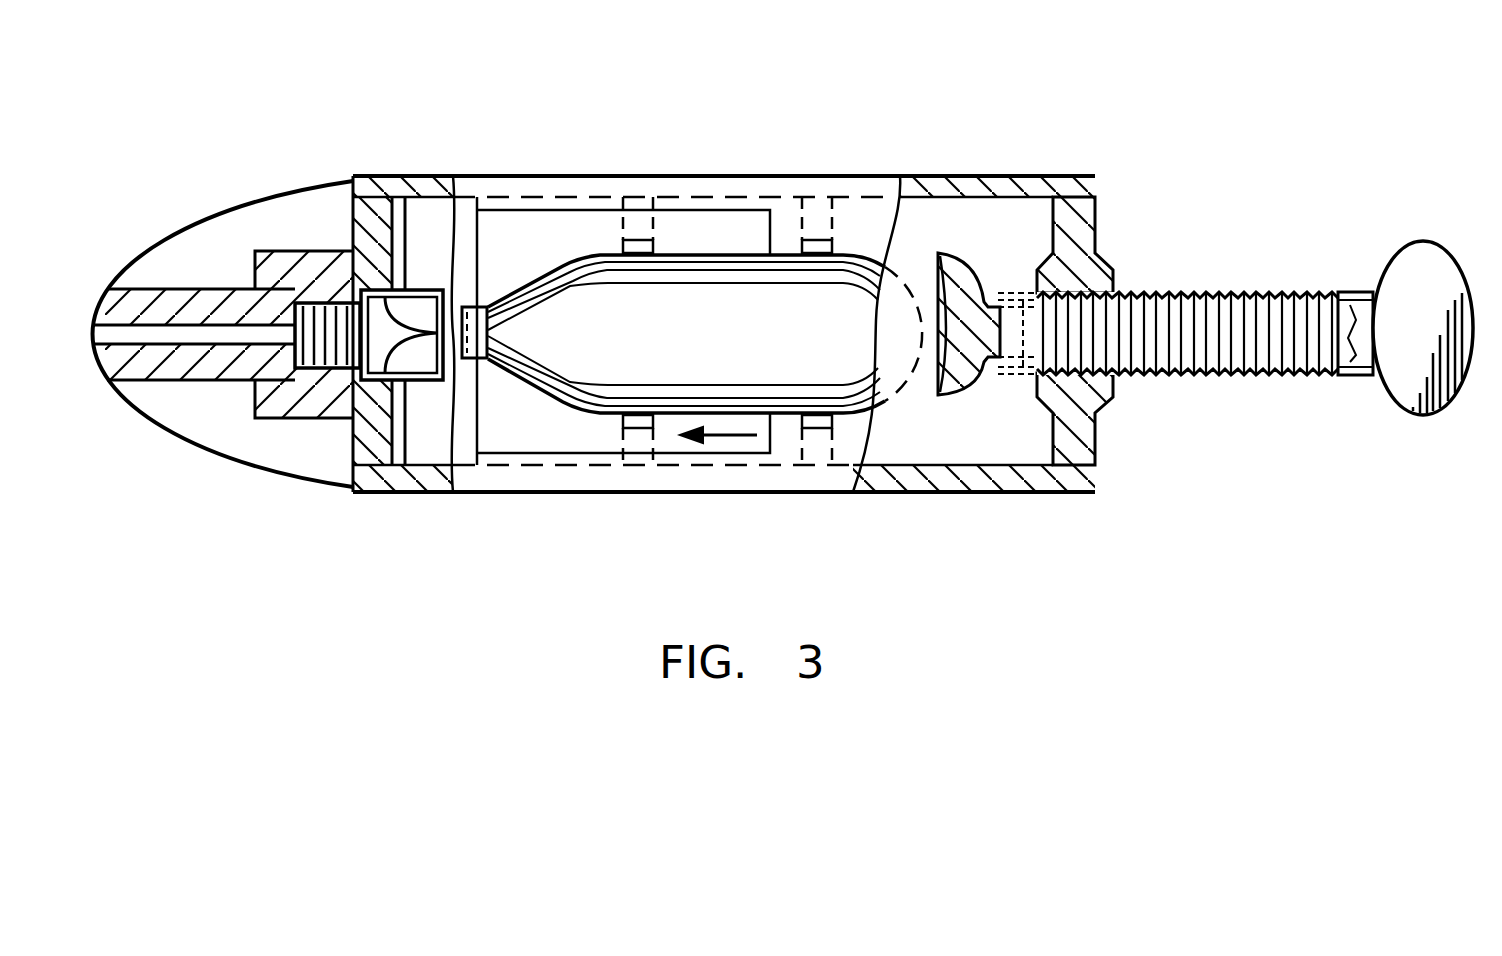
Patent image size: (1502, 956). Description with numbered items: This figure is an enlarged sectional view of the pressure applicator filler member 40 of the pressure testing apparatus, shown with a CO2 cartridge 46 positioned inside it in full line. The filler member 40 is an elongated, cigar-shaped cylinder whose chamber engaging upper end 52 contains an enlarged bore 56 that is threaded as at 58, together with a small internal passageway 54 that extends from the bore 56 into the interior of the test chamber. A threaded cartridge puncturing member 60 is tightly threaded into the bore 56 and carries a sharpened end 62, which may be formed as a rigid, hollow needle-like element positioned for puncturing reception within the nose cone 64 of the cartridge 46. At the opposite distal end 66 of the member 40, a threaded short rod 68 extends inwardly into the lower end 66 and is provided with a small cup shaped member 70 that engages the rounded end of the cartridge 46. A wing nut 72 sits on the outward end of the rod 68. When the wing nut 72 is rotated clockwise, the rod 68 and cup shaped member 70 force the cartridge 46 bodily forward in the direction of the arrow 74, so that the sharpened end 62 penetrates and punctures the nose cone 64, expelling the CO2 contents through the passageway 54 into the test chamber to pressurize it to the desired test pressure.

The pressure applicator filler member 40 is at (722, 164).
The CO2 cartridge 46 is at (735, 345).
The chamber engaging upper end 52 is at (200, 446).
The internal passageway 54 is at (208, 333).
The enlarged bore 56 is at (290, 378).
The threads 58 is at (312, 300).
The cartridge puncturing member 60 is at (393, 258).
The sharpened end 62 is at (395, 382).
The nose cone 64 is at (481, 305).
The distal end 66 is at (1072, 185).
The threaded short rod 68 is at (1238, 378).
The cup shaped member 70 is at (958, 368).
The wing nut 72 is at (1383, 393).
The arrow 74 is at (737, 440).